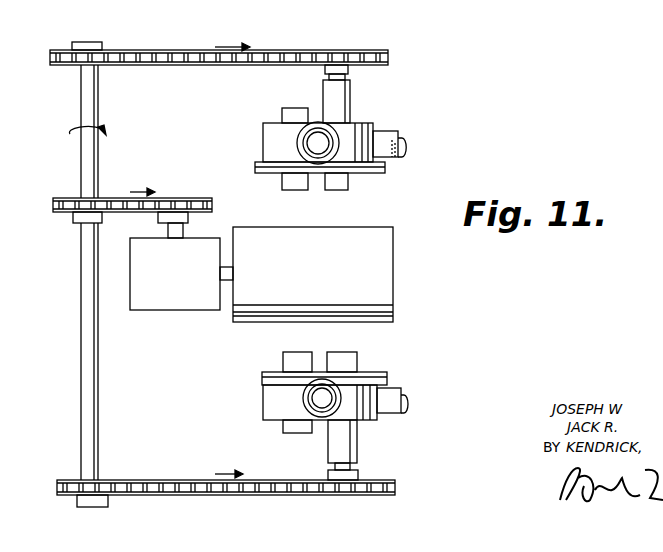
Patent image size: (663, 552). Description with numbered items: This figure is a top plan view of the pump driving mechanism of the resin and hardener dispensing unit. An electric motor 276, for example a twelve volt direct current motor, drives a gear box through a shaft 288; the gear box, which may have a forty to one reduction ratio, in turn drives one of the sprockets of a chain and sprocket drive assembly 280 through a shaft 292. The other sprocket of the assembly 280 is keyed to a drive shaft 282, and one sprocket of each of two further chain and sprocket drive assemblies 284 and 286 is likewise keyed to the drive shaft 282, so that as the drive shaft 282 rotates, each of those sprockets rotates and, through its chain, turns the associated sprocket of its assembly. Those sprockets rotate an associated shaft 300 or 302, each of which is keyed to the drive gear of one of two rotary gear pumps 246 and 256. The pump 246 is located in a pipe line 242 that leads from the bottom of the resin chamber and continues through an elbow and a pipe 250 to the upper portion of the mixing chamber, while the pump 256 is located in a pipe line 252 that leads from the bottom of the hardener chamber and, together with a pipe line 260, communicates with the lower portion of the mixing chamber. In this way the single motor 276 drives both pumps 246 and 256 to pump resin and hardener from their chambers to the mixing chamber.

The pipe line 242 is at (322, 380).
The rotary gear pump 246 is at (358, 392).
The pipe 250 is at (395, 398).
The pipe line 252 is at (333, 123).
The rotary gear pump 256 is at (363, 142).
The pipe line 260 is at (397, 140).
The electric motor 276 is at (313, 274).
The chain and sprocket drive assembly 280 is at (213, 155).
The drive shaft 282 is at (88, 317).
The chain and sprocket drive assembly 284 is at (155, 478).
The chain and sprocket drive assembly 286 is at (351, 17).
The shaft 288 is at (227, 280).
The shaft 292 is at (180, 231).
The shaft 300 is at (350, 467).
The shaft 302 is at (348, 73).